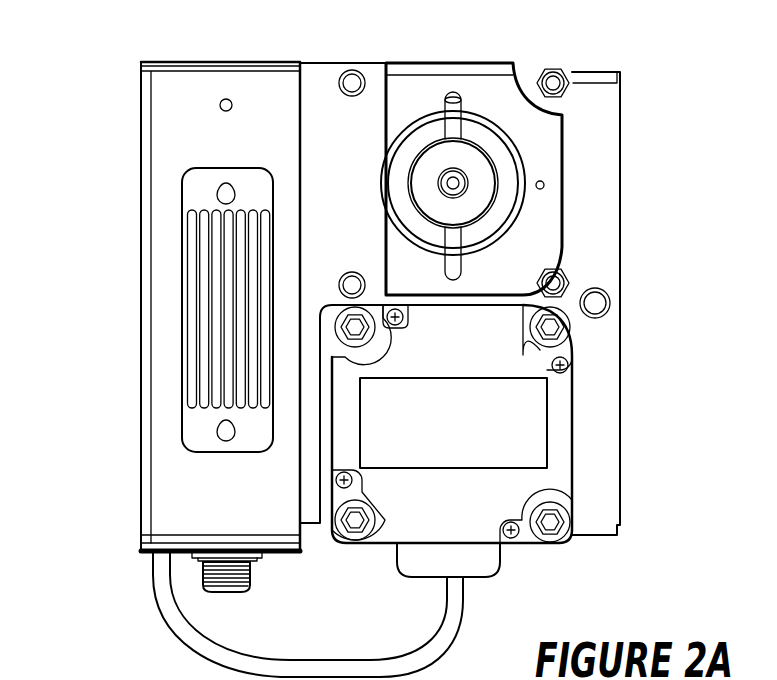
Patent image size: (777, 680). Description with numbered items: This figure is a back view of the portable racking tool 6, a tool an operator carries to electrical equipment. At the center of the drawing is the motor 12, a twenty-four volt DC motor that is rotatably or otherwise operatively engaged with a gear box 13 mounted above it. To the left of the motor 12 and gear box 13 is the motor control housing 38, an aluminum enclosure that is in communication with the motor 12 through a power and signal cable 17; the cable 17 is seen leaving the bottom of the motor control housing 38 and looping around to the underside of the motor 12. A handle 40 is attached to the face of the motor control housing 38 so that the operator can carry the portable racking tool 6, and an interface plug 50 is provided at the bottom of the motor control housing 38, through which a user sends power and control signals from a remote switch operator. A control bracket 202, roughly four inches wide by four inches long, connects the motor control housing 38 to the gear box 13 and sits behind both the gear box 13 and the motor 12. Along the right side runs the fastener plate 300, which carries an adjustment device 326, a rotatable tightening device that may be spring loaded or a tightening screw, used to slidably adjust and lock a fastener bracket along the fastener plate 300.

The portable racking tool 6 is at (66, 585).
The motor 12 is at (558, 435).
The gear box 13 is at (500, 93).
The power and signal cable 17 is at (170, 603).
The motor control housing 38 is at (131, 307).
The handle 40 is at (260, 186).
The interface plug 50 is at (250, 578).
The control bracket 202 is at (330, 108).
The fastener plate 300 is at (612, 210).
The adjustment device 326 is at (607, 318).